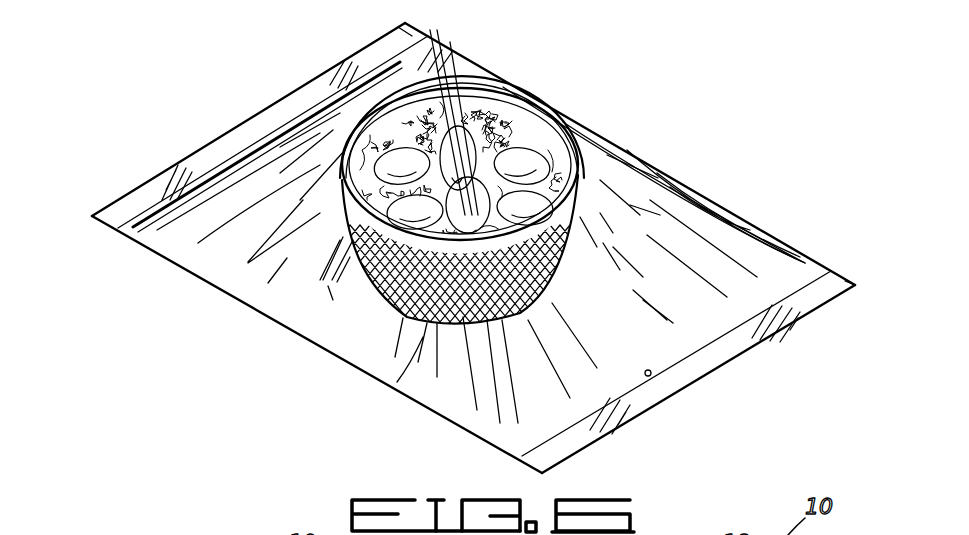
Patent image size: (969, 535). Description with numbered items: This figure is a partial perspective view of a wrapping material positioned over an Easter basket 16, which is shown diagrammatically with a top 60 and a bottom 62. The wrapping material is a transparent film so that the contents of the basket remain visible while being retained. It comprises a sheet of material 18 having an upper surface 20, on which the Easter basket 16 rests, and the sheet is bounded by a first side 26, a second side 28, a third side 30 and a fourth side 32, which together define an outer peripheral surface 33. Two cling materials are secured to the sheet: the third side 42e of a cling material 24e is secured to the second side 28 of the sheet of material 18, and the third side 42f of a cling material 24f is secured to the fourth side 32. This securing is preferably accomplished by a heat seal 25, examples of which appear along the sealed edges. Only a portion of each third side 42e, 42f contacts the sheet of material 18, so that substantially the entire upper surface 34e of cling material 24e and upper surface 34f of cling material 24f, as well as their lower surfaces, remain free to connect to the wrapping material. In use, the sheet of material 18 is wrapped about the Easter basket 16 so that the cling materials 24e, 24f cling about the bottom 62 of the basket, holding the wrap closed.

The Easter basket 16 is at (553, 116).
The sheet of material 18 is at (736, 207).
The upper surface 20 is at (597, 165).
The cling material 24e is at (137, 183).
The cling material 24f is at (820, 308).
The heat seal 25 is at (423, 37).
The first side 26 is at (315, 347).
The second side 28 is at (678, 367).
The third side 30 is at (675, 177).
The fourth side 32 is at (280, 120).
The outer peripheral surface 33 is at (484, 445).
The upper surface 34e is at (385, 40).
The upper surface 34f is at (743, 338).
The third side 42e is at (281, 122).
The third side 42f is at (648, 376).
The top 60 is at (503, 85).
The bottom 62 is at (427, 326).